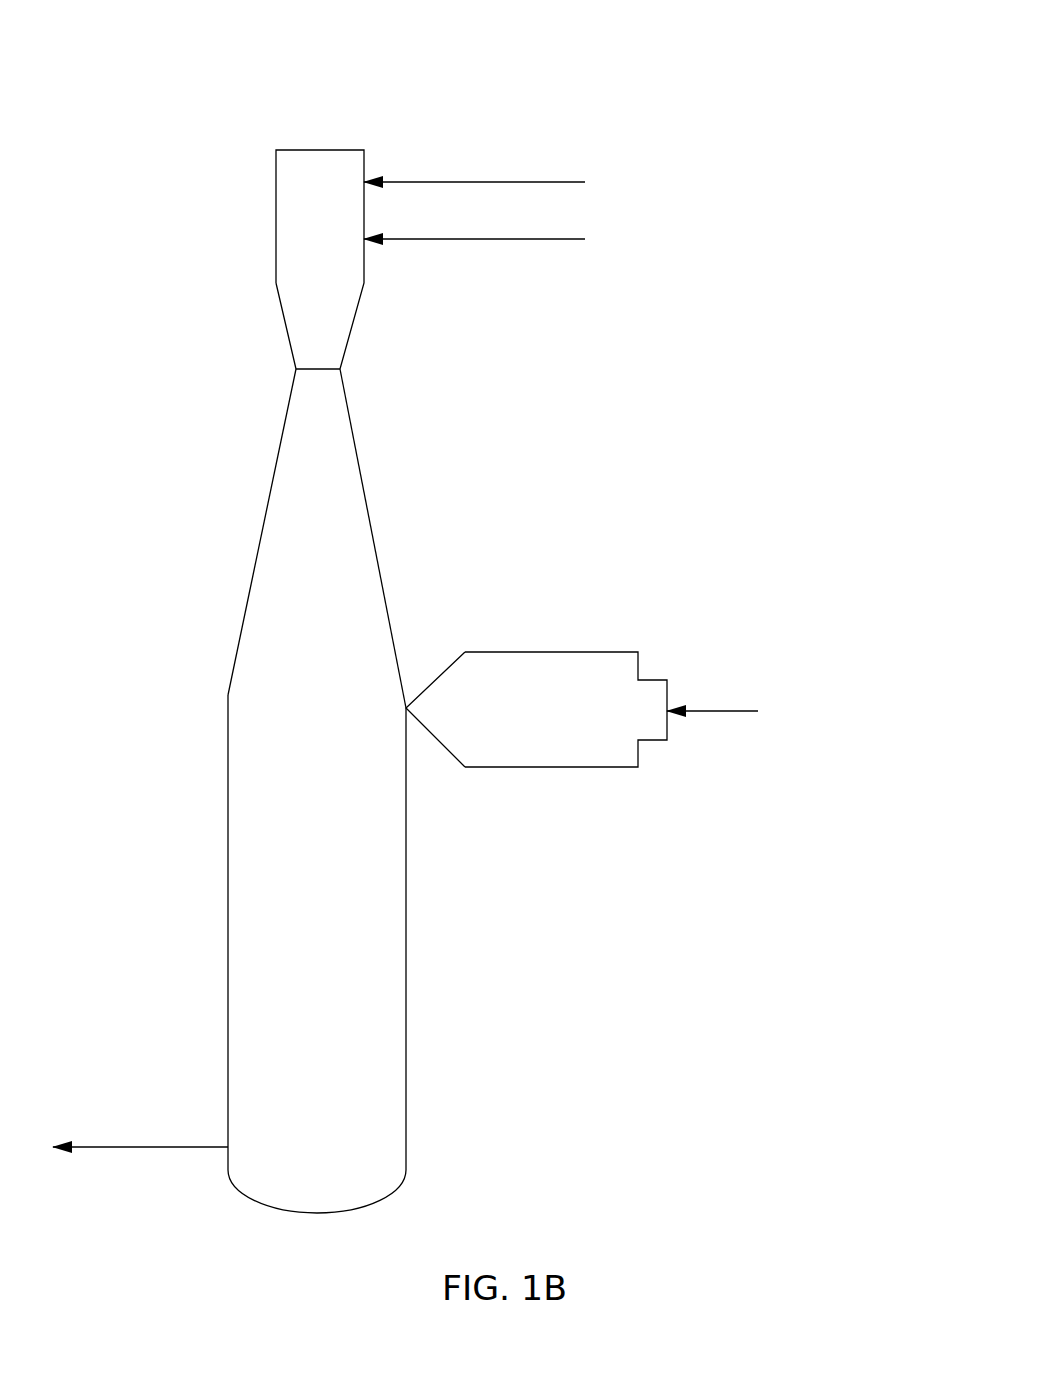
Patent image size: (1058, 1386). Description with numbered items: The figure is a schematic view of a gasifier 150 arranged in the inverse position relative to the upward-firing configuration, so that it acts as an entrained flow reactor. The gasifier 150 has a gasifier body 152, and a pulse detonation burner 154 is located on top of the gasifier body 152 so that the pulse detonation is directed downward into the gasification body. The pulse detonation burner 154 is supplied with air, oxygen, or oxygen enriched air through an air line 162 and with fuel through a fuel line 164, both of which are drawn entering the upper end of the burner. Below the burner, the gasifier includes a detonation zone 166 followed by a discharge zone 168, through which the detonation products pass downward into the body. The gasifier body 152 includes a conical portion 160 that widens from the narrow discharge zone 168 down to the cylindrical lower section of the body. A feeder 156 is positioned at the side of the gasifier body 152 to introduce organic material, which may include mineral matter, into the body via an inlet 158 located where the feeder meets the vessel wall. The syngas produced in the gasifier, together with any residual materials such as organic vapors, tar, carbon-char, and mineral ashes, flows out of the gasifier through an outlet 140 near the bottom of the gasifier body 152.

The outlet 140 is at (212, 1143).
The gasifier 150 is at (313, 43).
The gasifier body 152 is at (405, 970).
The pulse detonation burner 154 is at (276, 268).
The feeder 156 is at (568, 652).
The inlet 158 is at (408, 712).
The conical portion 160 is at (263, 530).
The air line 162 is at (553, 240).
The fuel line 164 is at (480, 182).
The detonation zone 166 is at (308, 326).
The discharge zone 168 is at (308, 438).